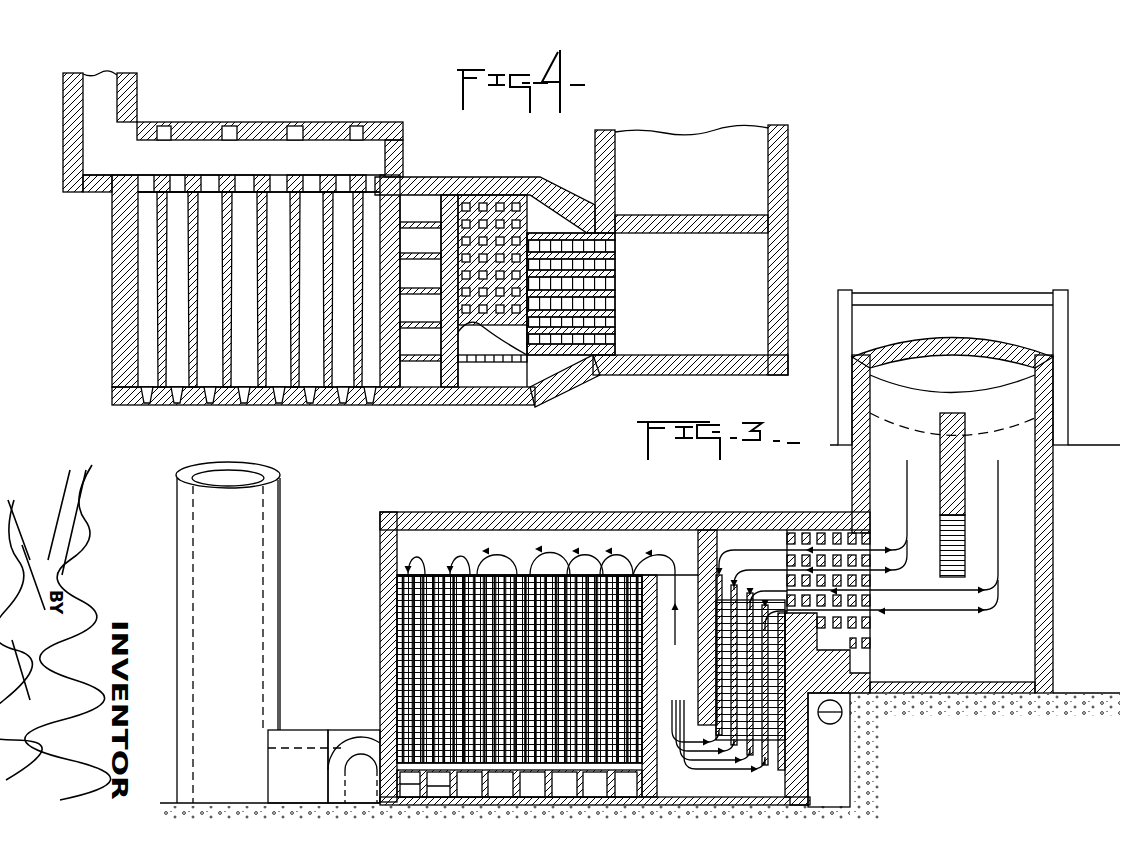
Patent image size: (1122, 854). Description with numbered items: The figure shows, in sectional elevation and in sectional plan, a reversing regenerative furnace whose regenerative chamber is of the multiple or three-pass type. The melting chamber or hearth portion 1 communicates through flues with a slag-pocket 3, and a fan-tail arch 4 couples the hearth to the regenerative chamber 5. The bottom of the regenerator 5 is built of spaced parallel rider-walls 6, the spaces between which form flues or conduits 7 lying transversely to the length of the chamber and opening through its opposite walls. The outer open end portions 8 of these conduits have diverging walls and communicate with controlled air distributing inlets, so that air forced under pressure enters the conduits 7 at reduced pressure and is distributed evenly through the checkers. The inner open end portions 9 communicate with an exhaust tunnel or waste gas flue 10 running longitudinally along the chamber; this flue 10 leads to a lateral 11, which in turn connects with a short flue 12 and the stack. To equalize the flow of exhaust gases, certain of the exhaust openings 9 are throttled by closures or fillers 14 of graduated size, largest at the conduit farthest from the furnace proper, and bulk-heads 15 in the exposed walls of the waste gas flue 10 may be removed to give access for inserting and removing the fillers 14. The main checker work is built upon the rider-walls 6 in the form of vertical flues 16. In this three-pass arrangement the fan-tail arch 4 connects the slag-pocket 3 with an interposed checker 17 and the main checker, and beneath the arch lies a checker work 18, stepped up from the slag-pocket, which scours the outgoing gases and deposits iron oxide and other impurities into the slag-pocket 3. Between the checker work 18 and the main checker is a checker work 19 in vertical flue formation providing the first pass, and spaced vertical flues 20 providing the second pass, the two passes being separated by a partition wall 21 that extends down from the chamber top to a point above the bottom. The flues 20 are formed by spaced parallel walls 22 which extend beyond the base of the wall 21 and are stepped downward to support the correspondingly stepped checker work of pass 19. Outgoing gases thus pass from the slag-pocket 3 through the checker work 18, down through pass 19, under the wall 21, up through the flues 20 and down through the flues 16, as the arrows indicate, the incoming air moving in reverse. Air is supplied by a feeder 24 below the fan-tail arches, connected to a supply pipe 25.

In FIG. 3, the melting chamber or hearth portion 1 is at (1012, 422).
In FIG. 4, the slag-pocket 3 is at (690, 250).
In FIG. 3, the slag-pocket 3 is at (927, 491).
In FIG. 4, the fan-tail arch 4 is at (575, 390).
In FIG. 3, the fan-tail arch 4 is at (818, 530).
In FIG. 4, the regenerative chamber 5 is at (112, 313).
In FIG. 3, the regenerative chamber 5 is at (498, 541).
In FIG. 4, the rider-wall 6 is at (168, 270).
In FIG. 4, the flue or conduit 7 is at (259, 289).
In FIG. 3, the flue or conduit 7 is at (519, 686).
In FIG. 4, the outer open end portion 8 is at (258, 395).
In FIG. 4, the inner open end portion 9 is at (326, 185).
In FIG. 4, the exhaust tunnel or waste gas flue 10 is at (243, 157).
In FIG. 4, the lateral 11 is at (100, 131).
In FIG. 3, the lateral 11 is at (354, 766).
In FIG. 3, the short flue 12 is at (306, 766).
In FIG. 4, the closure or filler 14 is at (146, 177).
In FIG. 3, the closure or filler 14 is at (529, 791).
In FIG. 4, the bulk-head 15 is at (168, 122).
In FIG. 3, the vertical flue 16 is at (418, 575).
In FIG. 3, the interposed checker 17 is at (735, 543).
In FIG. 4, the checker work 18 is at (583, 294).
In FIG. 3, the checker work 18 is at (858, 626).
In FIG. 4, the checker work 19 is at (492, 291).
In FIG. 3, the checker work 19 is at (752, 602).
In FIG. 3, the spaced vertical flue 20 is at (712, 686).
In FIG. 3, the partition wall 21 is at (712, 550).
In FIG. 4, the spaced parallel wall 22 is at (423, 232).
In FIG. 3, the spaced parallel wall 22 is at (666, 576).
In FIG. 3, the feeder 24 is at (838, 724).
In FIG. 3, the supply pipe 25 is at (822, 724).